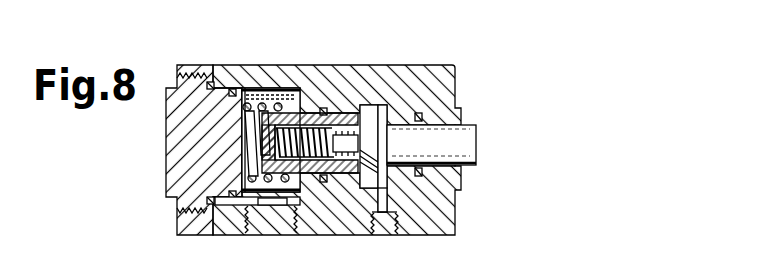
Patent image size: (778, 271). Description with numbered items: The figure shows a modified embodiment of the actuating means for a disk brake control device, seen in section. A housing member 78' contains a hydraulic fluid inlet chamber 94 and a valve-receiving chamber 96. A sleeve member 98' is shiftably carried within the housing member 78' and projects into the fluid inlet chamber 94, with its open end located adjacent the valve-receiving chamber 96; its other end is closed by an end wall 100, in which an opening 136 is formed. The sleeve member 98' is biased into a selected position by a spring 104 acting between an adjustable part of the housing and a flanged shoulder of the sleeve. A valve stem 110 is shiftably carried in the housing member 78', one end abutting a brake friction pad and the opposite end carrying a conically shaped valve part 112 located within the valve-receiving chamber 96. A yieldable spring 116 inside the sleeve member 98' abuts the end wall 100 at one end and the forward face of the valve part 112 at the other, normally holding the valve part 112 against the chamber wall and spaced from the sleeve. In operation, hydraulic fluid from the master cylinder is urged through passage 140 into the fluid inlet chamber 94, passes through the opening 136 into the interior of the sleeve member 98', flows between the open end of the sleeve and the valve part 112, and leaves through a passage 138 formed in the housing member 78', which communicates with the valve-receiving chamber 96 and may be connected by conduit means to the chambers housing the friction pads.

The housing member 78' is at (337, 129).
The hydraulic fluid inlet chamber 94 is at (271, 98).
The valve-receiving chamber 96 is at (380, 105).
The sleeve member 98' is at (314, 101).
The end wall 100 is at (270, 120).
The spring 104 is at (252, 172).
The valve stem 110 is at (465, 137).
The valve part 112 is at (372, 140).
The yieldable spring 116 is at (313, 160).
The opening 136 is at (268, 146).
The passage 138 is at (383, 202).
The passage 140 is at (276, 205).